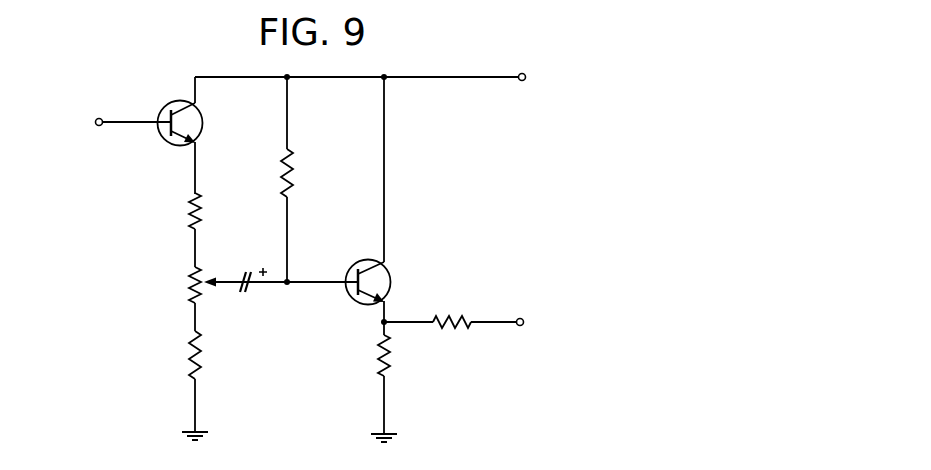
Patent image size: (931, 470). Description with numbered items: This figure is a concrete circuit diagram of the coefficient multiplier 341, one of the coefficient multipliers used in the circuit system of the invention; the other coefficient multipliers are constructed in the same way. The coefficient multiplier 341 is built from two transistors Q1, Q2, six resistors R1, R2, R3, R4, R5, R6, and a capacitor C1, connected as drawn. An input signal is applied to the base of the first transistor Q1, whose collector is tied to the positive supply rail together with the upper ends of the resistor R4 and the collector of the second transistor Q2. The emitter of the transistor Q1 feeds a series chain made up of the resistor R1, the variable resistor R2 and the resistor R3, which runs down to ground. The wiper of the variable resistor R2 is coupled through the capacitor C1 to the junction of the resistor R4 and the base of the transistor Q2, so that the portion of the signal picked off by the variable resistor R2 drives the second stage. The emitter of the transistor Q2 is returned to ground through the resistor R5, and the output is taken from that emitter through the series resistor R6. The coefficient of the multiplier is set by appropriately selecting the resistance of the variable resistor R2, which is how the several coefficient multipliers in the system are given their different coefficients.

The coefficient multiplier 341 is at (481, 158).
The transistor Q1 is at (178, 110).
The transistor Q2 is at (366, 267).
The resistor R1 is at (178, 211).
The variable resistor R2 is at (221, 285).
The resistor R3 is at (177, 355).
The resistor R4 is at (270, 173).
The resistor R5 is at (366, 355).
The resistor R6 is at (452, 307).
The capacitor C1 is at (251, 267).